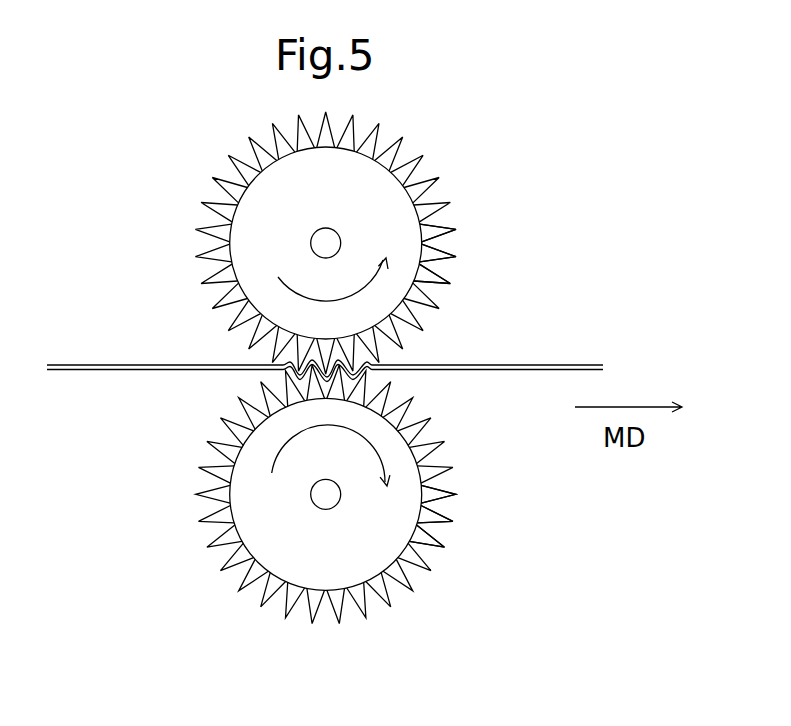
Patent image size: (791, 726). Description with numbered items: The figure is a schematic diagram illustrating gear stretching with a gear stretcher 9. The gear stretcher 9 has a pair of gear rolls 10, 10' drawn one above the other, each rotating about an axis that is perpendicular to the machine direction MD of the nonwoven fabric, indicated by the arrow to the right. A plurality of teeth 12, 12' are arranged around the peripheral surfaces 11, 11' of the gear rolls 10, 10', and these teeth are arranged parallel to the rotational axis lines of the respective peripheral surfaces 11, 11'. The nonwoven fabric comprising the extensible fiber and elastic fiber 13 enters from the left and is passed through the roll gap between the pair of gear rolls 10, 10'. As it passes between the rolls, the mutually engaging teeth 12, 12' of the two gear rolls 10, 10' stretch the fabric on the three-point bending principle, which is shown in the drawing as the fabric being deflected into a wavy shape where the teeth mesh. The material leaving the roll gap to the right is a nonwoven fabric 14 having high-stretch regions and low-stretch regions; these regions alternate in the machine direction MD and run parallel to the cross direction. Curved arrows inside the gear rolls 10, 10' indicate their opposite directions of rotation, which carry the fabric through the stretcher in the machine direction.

The gear stretcher 9 is at (113, 177).
The gear roll 10 is at (294, 225).
The peripheral surface 11 is at (360, 243).
The teeth 12 is at (484, 242).
The nonwoven fabric comprising the extensible fiber and elastic fiber 13 is at (90, 363).
The nonwoven fabric having high-stretch regions and low-stretch regions 14 is at (585, 367).
The gear roll 10' is at (276, 494).
The peripheral surface 11' is at (326, 532).
The teeth 12' is at (485, 506).